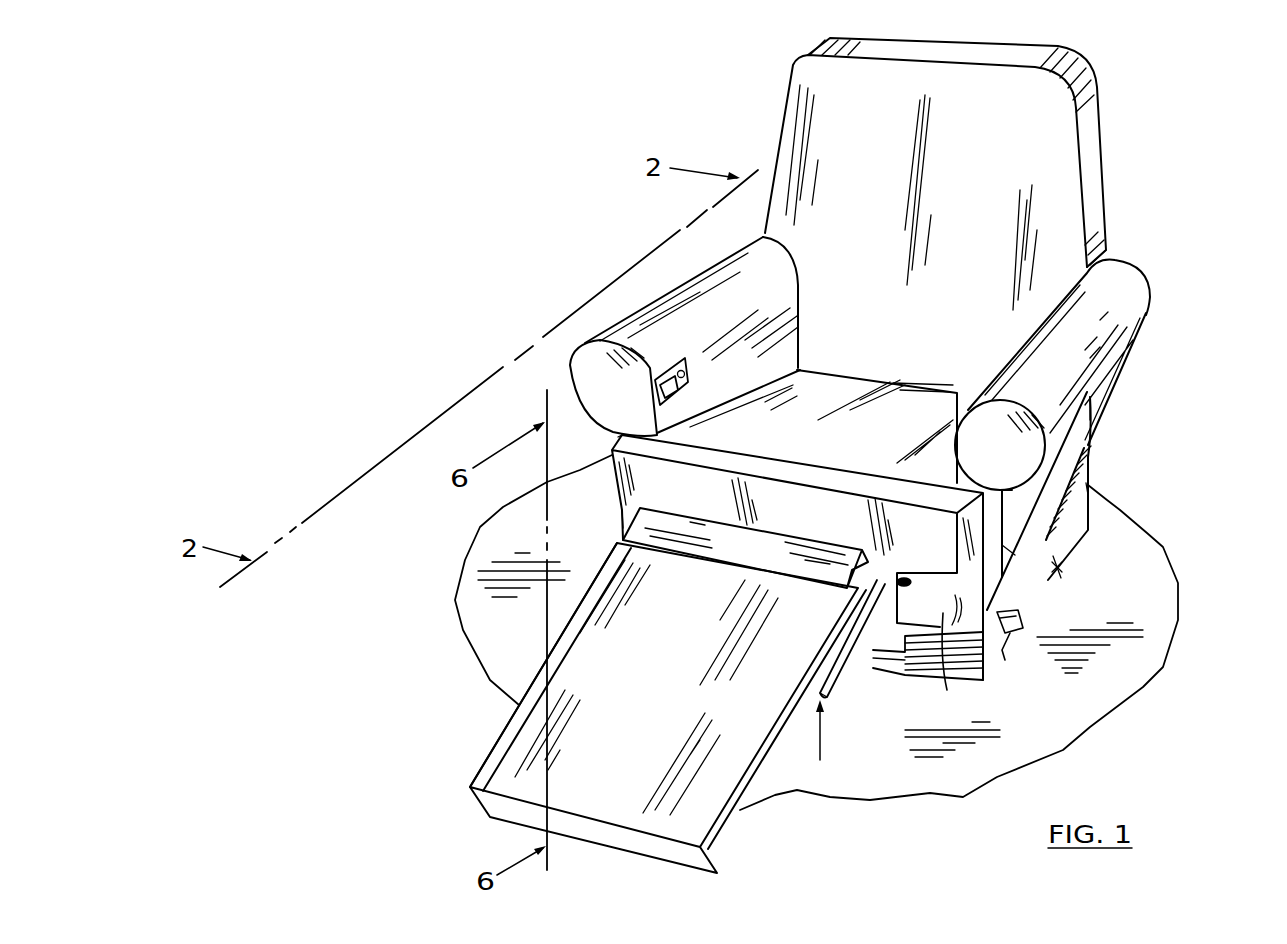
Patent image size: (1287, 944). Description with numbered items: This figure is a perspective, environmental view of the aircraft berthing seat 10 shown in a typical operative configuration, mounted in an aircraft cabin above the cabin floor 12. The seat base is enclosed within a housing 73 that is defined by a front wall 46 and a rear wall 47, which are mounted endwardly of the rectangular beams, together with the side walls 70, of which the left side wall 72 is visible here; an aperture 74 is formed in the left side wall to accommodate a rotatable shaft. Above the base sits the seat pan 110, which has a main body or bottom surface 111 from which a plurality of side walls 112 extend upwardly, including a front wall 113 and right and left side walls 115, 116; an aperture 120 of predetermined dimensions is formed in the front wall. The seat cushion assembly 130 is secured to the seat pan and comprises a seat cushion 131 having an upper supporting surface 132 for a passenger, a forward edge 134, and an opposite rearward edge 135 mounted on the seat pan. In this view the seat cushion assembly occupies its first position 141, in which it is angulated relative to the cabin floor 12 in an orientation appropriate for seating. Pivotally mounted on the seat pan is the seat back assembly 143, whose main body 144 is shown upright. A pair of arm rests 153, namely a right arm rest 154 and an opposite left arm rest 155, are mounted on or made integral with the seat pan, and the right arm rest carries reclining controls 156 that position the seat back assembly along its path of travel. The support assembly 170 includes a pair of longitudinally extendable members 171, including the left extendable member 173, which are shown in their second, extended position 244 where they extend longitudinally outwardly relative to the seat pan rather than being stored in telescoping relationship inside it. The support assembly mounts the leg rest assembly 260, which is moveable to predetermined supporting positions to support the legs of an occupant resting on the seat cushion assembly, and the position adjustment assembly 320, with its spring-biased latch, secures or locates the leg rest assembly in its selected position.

The aircraft berthing seat 10 is at (1170, 505).
The cabin floor 12 is at (1178, 590).
The front wall 46 is at (910, 647).
The rear wall 47 is at (1086, 490).
The side walls 70 is at (1058, 568).
The left side wall 72 is at (1058, 566).
The housing 73 is at (1016, 652).
The aperture 74 is at (1010, 628).
The seat pan 110 is at (1092, 455).
The main body 111 is at (1092, 423).
The side walls 112 is at (1037, 525).
The front wall 113 is at (956, 667).
The right side wall 115 is at (618, 518).
The left side wall 116 is at (1010, 552).
The aperture 120 is at (905, 596).
The seat cushion assembly 130 is at (822, 405).
The seat cushion 131 is at (843, 454).
The upper supporting surface 132 is at (907, 407).
The forward edge 134 is at (728, 450).
The rearward edge 135 is at (893, 384).
The first position 141 is at (618, 437).
The seat back assembly 143 is at (1035, 177).
The main body 144 is at (1010, 130).
The arm rests 153 is at (697, 337).
The right arm rest 154 is at (575, 365).
The left arm rest 155 is at (1103, 327).
The reclining controls 156 is at (690, 372).
The support assembly 170 is at (843, 747).
The longitudinally extendable members 171 is at (858, 618).
The left extendable member 173 is at (838, 677).
The second, extended position 244 is at (507, 765).
The leg rest assembly 260 is at (657, 754).
The position adjustment assembly 320 is at (770, 557).